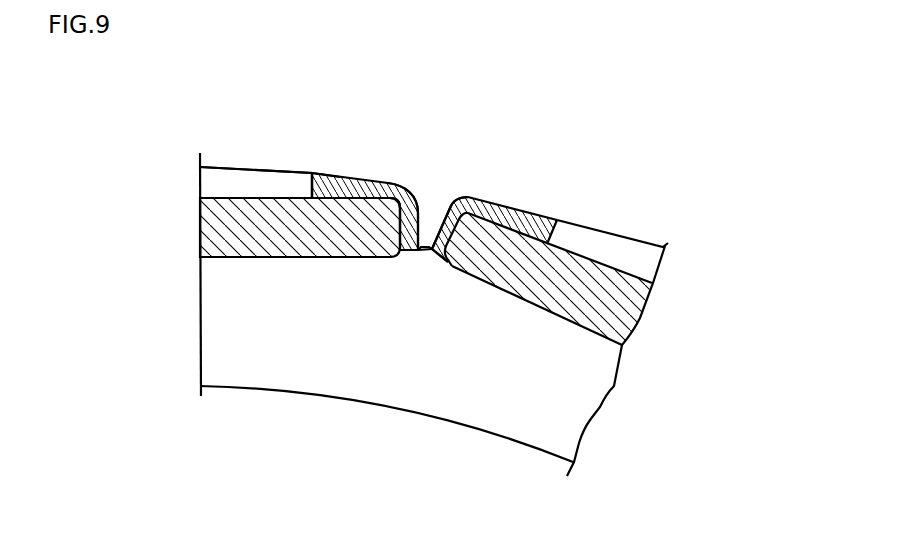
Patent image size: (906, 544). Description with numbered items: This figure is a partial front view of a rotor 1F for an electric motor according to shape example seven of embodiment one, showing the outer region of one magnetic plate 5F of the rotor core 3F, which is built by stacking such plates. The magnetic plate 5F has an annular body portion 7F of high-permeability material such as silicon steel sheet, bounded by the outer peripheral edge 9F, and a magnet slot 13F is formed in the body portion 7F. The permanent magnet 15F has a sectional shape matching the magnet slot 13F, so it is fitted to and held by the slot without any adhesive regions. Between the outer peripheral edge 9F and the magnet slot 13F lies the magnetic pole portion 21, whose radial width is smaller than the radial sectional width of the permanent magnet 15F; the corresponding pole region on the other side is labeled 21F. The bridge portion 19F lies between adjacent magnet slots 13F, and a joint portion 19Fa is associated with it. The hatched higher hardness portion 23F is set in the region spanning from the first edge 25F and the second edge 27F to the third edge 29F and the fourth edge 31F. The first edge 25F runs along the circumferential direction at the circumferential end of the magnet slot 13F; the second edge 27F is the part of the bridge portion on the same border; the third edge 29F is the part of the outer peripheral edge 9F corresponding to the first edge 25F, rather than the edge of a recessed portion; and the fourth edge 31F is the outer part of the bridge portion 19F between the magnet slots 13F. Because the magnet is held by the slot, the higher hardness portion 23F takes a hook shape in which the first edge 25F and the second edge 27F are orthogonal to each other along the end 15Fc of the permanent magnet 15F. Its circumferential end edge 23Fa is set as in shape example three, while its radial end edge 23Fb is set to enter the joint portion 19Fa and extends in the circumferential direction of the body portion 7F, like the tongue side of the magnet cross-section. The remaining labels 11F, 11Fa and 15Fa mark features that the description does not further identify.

The joint structure 1F is at (486, 103).
The first member 3F is at (508, 158).
The magnetic plate 5F is at (592, 385).
The body portion 7F is at (562, 418).
The outer peripheral edge 9F is at (233, 170).
The gap 11F is at (436, 244).
The gap end portion 11Fa is at (313, 175).
The magnet slot 13F is at (233, 258).
The permanent magnet 15F is at (217, 223).
The upper surface of bonding layer 15Fa is at (366, 200).
The end of the permanent magnet 15Fc is at (372, 223).
The bridge portion 19F is at (430, 242).
The joint portion 19Fa is at (430, 258).
The magnetic pole portion 21 is at (632, 252).
The top coat layer 21F is at (258, 181).
The higher hardness portion 23F is at (378, 183).
The end edge in the circumferential direction 23Fa is at (290, 177).
The end edge in the radial direction 23Fb is at (420, 250).
The first edge 25F is at (395, 207).
The second edge 27F is at (412, 210).
The third edge 29F is at (364, 197).
The fourth edge 31F is at (431, 226).